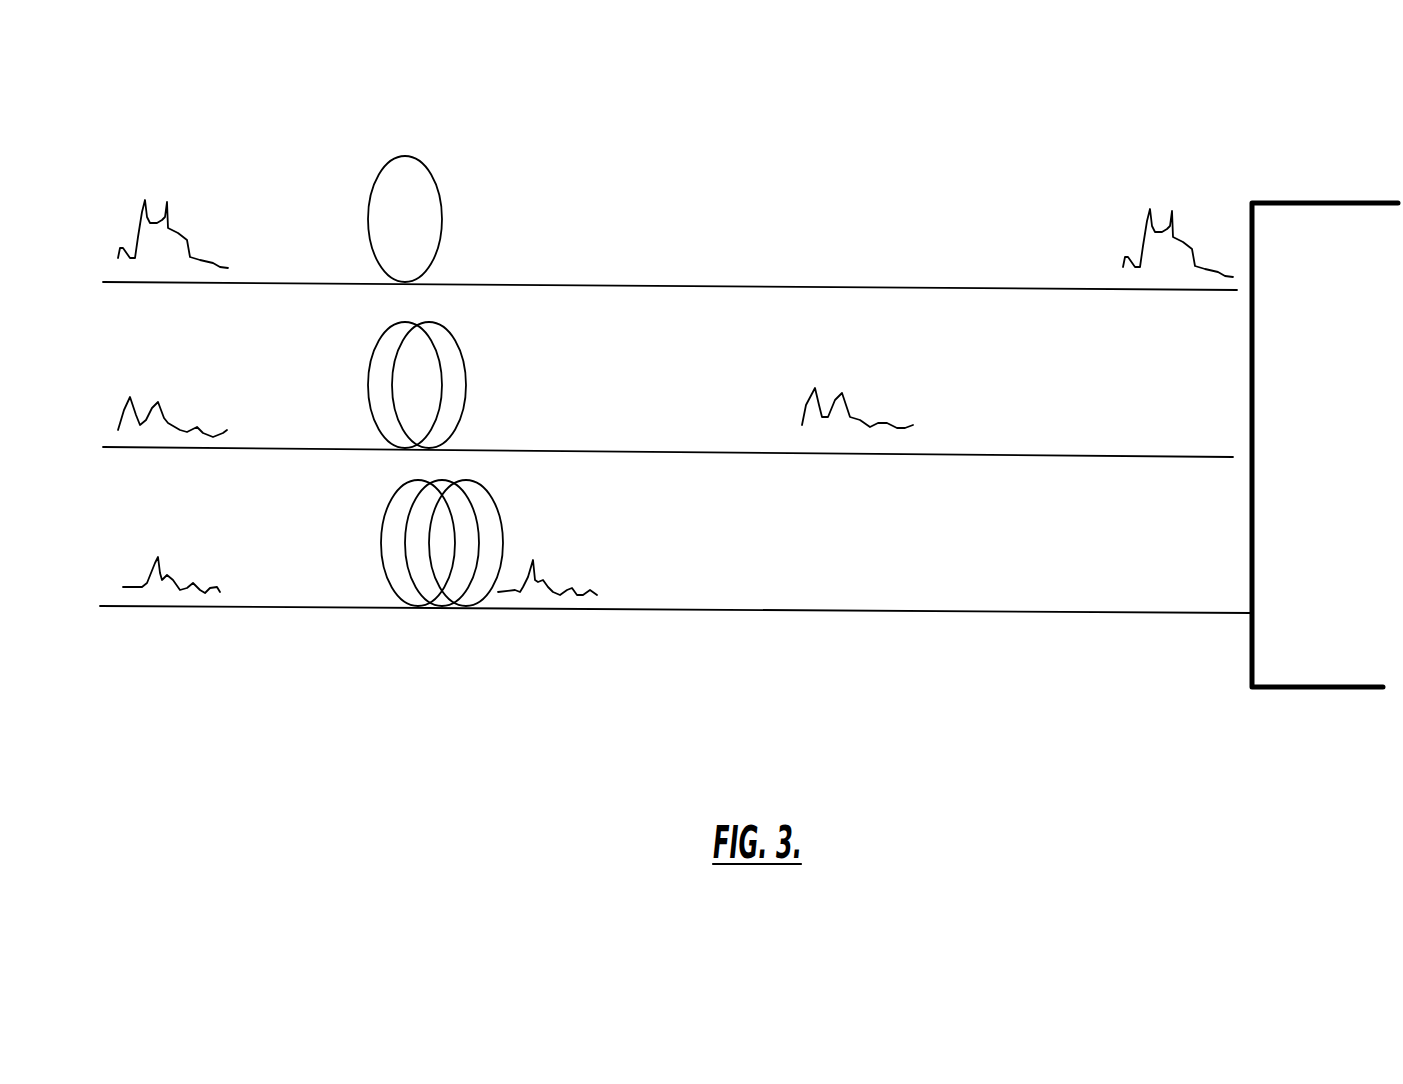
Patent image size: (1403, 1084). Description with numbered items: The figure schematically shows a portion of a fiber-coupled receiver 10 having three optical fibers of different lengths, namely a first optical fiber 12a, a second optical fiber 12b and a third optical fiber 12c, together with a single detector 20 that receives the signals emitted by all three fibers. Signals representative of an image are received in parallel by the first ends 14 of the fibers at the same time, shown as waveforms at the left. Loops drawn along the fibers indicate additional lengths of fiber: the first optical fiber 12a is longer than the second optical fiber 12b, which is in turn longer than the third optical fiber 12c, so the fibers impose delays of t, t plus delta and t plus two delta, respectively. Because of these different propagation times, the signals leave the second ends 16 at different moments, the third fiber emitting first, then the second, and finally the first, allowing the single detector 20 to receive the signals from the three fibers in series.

The fiber-coupled receiver 10 is at (758, 105).
The first optical fiber 12a is at (688, 612).
The second optical fiber 12b is at (660, 452).
The third optical fiber 12c is at (655, 287).
The first ends 14 is at (103, 282).
The second ends 16 is at (1237, 290).
The single detector 20 is at (1297, 225).